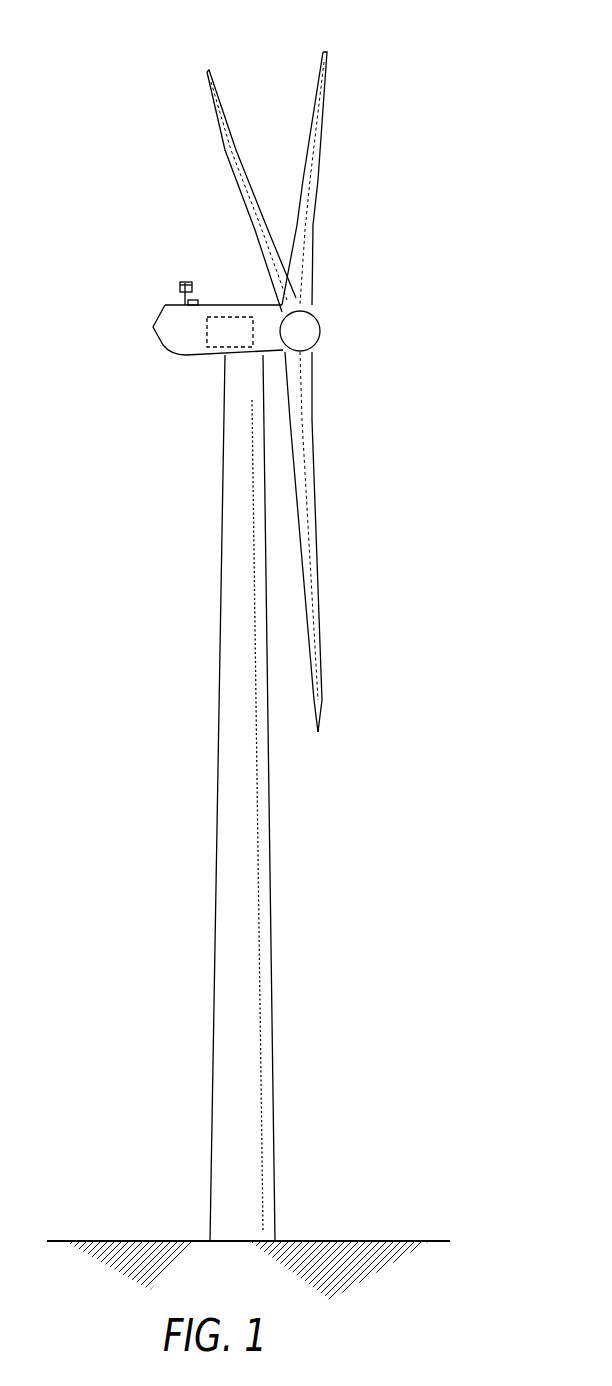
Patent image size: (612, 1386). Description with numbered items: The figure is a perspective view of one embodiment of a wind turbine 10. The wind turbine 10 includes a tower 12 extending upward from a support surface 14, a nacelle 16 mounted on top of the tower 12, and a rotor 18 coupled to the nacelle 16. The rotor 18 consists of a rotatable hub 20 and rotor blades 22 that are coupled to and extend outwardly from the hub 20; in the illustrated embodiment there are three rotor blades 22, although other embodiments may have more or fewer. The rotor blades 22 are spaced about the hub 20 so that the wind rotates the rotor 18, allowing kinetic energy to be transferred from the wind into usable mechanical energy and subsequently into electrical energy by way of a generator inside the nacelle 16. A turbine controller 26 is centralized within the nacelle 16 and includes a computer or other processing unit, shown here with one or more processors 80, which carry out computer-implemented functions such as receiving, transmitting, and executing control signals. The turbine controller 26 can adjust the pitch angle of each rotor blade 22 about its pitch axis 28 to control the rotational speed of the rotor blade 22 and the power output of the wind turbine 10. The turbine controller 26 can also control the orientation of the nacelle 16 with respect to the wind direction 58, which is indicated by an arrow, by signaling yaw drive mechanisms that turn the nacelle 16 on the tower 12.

The wind turbine 10 is at (430, 134).
The tower 12 is at (228, 917).
The support surface 14 is at (130, 1240).
The nacelle 16 is at (198, 357).
The rotor 18 is at (333, 300).
The rotatable hub 20 is at (319, 336).
The rotor blade 22 is at (308, 173).
The turbine controller 26 is at (228, 317).
The pitch axis 28 is at (240, 188).
The wind direction 58 is at (458, 193).
The processor 80 is at (180, 284).